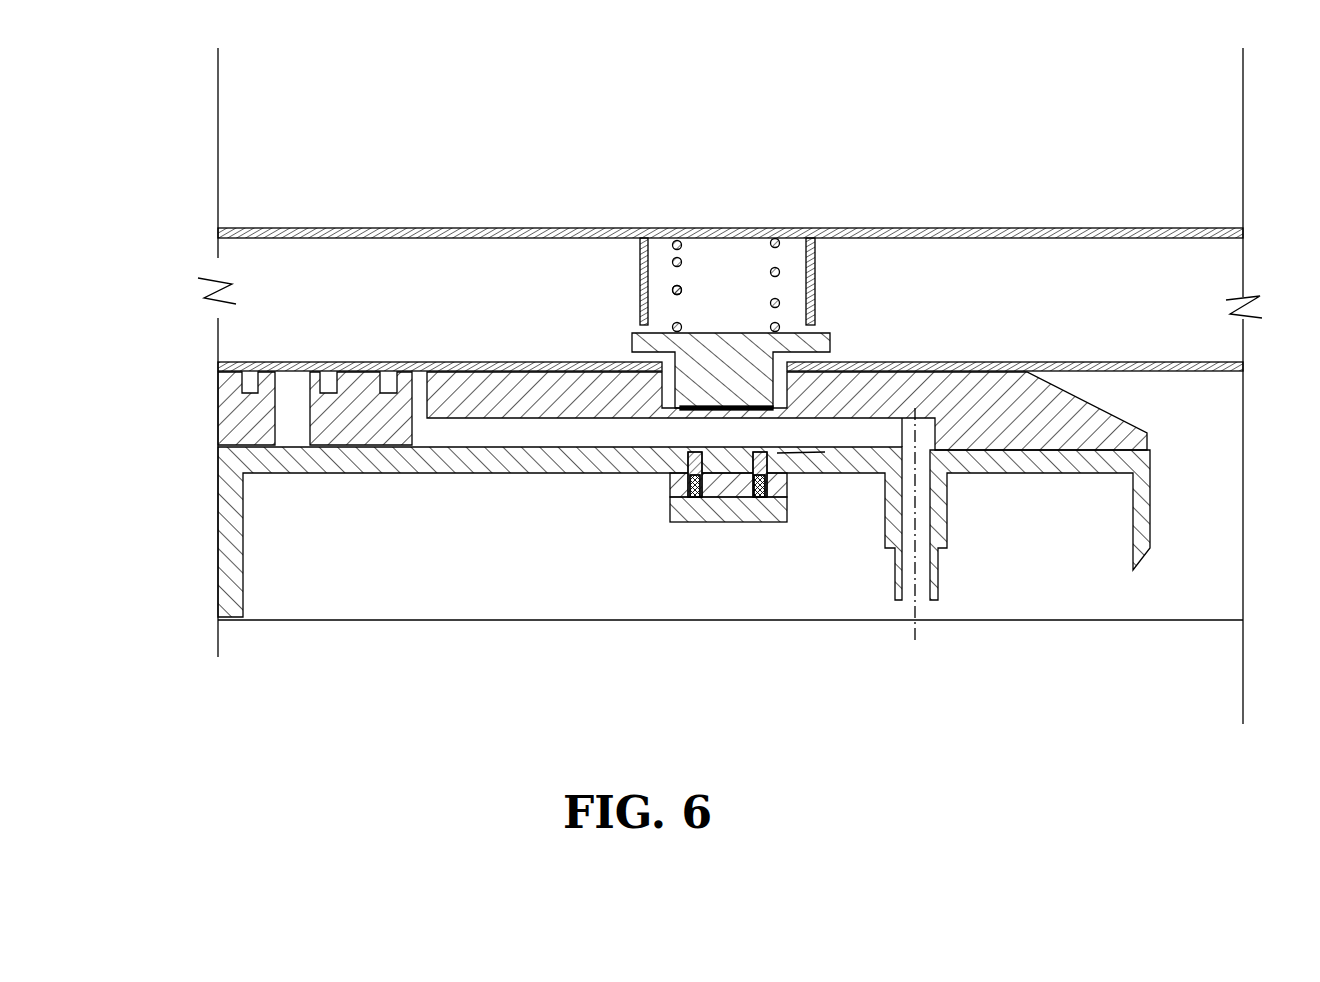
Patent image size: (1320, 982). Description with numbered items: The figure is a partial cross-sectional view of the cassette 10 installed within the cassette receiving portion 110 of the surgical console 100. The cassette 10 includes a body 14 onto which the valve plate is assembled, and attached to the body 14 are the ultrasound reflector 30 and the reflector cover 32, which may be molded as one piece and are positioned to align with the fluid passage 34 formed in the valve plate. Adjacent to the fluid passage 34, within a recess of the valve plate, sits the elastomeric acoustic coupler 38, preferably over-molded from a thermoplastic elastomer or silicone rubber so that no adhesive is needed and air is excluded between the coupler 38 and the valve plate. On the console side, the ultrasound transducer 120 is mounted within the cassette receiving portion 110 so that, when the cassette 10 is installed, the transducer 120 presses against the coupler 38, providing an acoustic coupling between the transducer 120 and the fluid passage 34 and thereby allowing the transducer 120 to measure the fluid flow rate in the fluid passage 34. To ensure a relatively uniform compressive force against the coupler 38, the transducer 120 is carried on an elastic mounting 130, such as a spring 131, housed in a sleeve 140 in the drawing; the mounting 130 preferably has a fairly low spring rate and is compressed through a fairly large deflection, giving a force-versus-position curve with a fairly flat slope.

The cassette 10 is at (217, 625).
The body 14 is at (410, 472).
The ultrasound reflector 30 is at (680, 490).
The reflector cover 32 is at (735, 523).
The fluid passage 34 is at (542, 443).
The elastomeric acoustic coupler 38 is at (775, 413).
The surgical console 100 is at (362, 205).
The cassette receiving portion 110 is at (1232, 534).
The ultrasound transducer 120 is at (833, 343).
The elastic mounting 130 is at (770, 240).
The spring 131 is at (772, 303).
The sleeve 140 is at (640, 290).